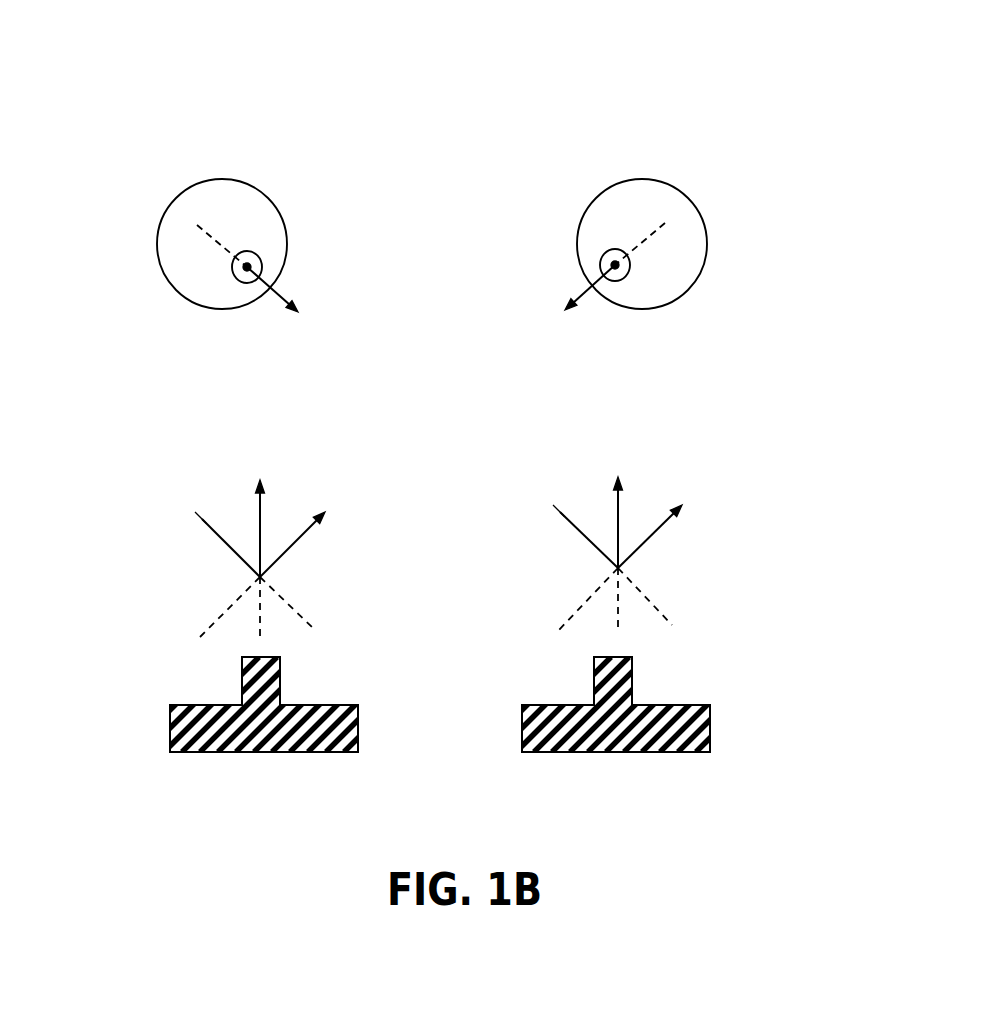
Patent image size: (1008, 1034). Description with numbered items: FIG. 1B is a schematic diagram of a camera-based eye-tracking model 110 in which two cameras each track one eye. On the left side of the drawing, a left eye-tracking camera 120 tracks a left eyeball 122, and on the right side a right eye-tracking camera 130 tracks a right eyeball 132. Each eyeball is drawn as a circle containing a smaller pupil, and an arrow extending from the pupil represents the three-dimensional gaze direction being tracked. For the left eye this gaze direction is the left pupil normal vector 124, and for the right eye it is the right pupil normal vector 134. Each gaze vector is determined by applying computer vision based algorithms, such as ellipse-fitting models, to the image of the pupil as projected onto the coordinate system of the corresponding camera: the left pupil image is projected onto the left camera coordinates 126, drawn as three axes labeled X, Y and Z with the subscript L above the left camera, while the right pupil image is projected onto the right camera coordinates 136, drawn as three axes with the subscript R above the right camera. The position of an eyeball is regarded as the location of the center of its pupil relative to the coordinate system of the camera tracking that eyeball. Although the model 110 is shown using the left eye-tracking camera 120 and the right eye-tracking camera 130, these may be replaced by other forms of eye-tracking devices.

The camera-based eye-tracking model 110 is at (660, 29).
The left eye-tracking camera 120 is at (273, 735).
The left eyeball 122 is at (233, 212).
The left pupil normal vector 124 is at (283, 292).
The left camera coordinates 126 is at (233, 512).
The right eye-tracking camera 130 is at (629, 737).
The right eyeball 132 is at (640, 205).
The right pupil normal vector 134 is at (583, 300).
The right camera coordinates 136 is at (663, 568).